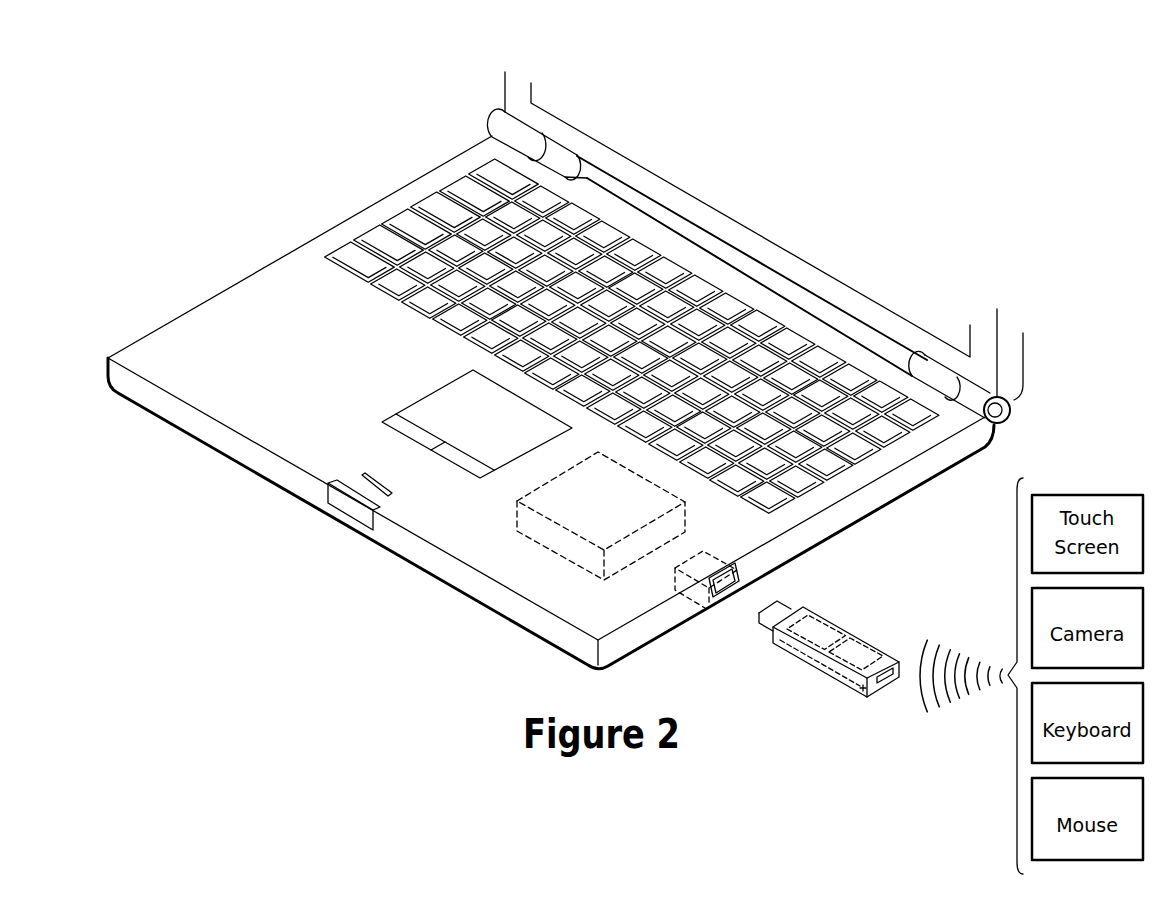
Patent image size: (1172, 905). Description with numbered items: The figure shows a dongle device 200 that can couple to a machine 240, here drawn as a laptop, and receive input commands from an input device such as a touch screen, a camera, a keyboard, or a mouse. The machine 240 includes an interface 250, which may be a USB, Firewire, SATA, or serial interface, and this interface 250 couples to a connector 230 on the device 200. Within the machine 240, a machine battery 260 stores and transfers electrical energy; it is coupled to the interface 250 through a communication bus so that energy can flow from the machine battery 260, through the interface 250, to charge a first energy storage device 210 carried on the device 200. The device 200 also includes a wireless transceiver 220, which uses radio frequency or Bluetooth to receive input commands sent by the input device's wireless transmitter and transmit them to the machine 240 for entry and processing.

The device 200 is at (834, 643).
The first energy storage device 210 is at (828, 614).
The wireless transceiver 220 is at (873, 641).
The connector 230 is at (789, 607).
The machine 240 is at (433, 581).
The interface 250 is at (727, 600).
The machine battery 260 is at (517, 512).